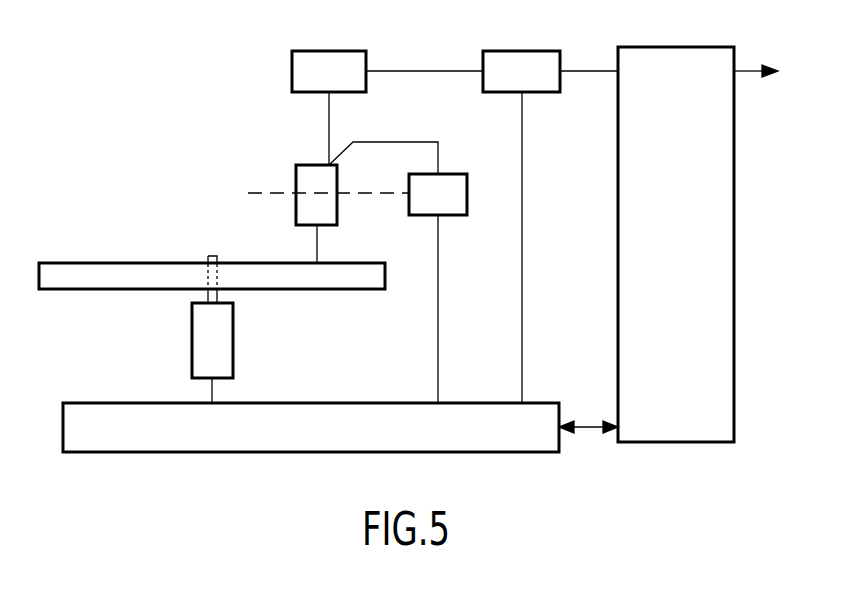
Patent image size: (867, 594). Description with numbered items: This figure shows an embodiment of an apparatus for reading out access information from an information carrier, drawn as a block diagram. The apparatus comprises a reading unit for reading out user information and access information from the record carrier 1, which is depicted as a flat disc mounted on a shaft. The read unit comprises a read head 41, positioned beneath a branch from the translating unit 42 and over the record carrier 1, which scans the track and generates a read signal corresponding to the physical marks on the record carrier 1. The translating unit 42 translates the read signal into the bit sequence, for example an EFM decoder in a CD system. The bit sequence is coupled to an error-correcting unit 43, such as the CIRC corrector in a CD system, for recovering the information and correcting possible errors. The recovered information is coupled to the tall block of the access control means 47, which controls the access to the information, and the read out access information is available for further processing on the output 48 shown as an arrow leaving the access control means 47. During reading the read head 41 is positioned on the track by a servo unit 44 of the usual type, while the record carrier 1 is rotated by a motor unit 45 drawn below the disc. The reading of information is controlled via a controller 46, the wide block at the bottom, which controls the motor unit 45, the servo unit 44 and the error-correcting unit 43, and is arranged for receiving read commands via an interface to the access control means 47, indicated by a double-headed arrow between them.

The record carrier 1 is at (352, 285).
The read head 41 is at (327, 212).
The translating unit 42 is at (326, 61).
The error-correcting unit 43 is at (518, 61).
The servo unit 44 is at (455, 203).
The motor unit 45 is at (222, 348).
The controller 46 is at (401, 405).
The access control means 47 is at (675, 57).
The output 48 is at (752, 71).